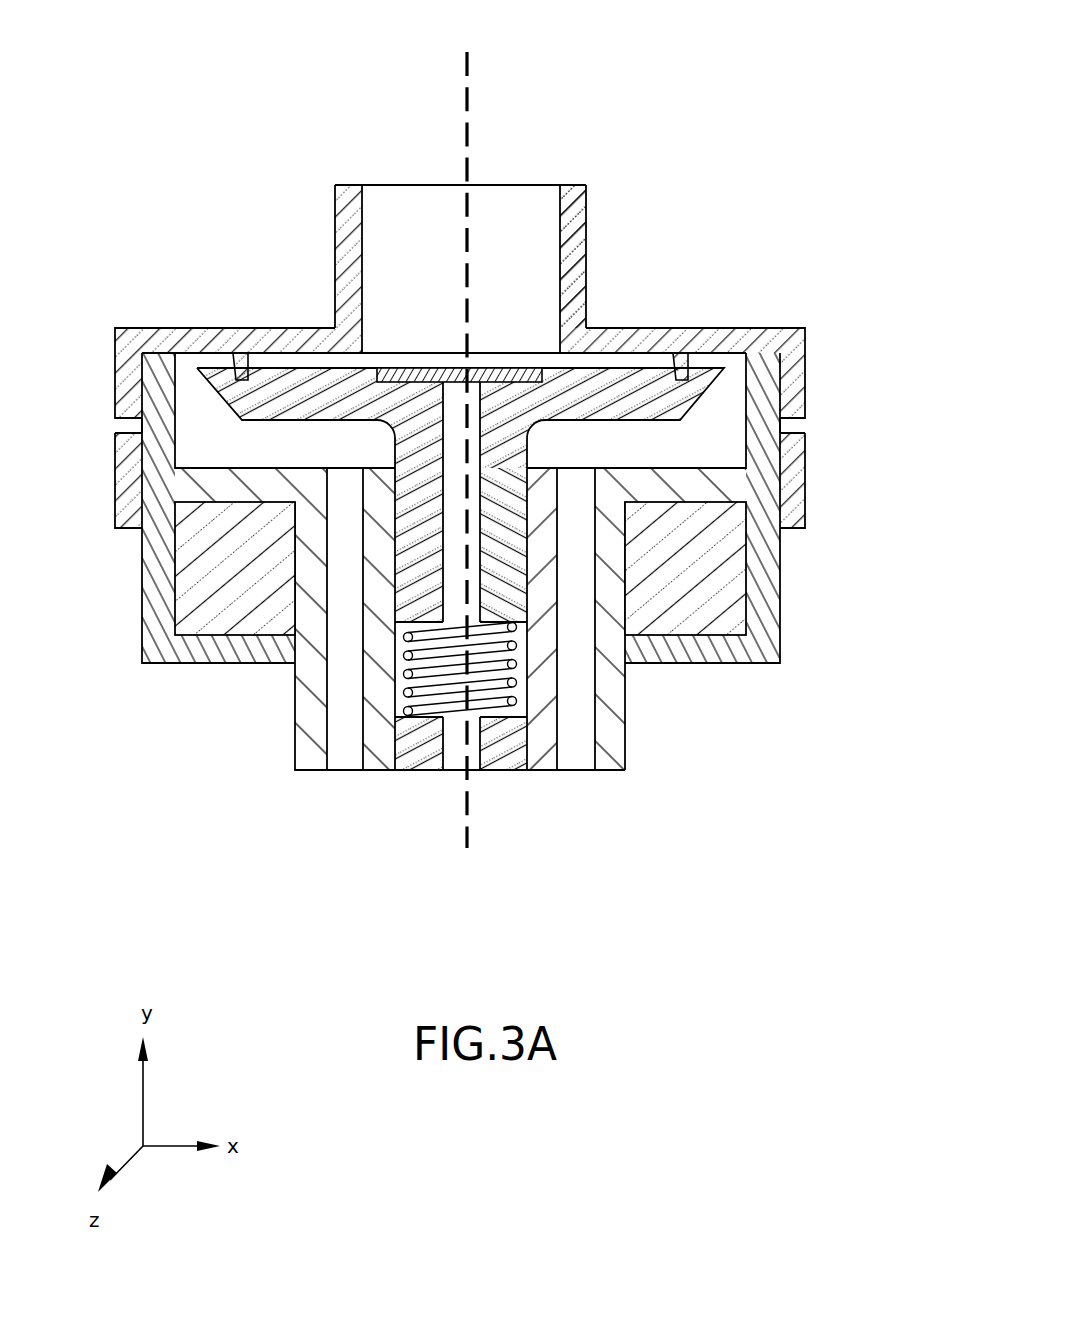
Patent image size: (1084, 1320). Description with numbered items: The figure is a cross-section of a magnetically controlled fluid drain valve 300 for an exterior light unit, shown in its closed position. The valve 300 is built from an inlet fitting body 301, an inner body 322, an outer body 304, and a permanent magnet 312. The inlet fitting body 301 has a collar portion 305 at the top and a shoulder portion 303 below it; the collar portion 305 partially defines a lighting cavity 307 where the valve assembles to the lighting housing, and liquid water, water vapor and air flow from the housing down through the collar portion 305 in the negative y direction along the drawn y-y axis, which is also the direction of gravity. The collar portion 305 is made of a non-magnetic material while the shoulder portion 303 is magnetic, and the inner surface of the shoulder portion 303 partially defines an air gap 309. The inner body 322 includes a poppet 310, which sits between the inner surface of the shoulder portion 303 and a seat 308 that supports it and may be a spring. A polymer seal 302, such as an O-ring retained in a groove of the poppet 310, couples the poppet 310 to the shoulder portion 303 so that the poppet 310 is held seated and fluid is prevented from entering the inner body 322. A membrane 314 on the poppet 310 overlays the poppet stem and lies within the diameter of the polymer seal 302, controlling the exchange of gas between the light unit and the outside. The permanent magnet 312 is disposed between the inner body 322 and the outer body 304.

The magnetically controlled fluid drain valve 300 is at (511, 481).
The inlet fitting body 301 is at (565, 243).
The polymer seal 302 is at (678, 375).
The shoulder portion 303 is at (155, 335).
The outer body 304 is at (770, 623).
The collar portion 305 is at (563, 290).
The lighting cavity 307 is at (422, 228).
The seat 308 is at (410, 755).
The air gap 309 is at (481, 375).
The poppet 310 is at (415, 603).
The permanent magnet 312 is at (205, 618).
The membrane 314 is at (392, 373).
The inner body 322 is at (750, 488).